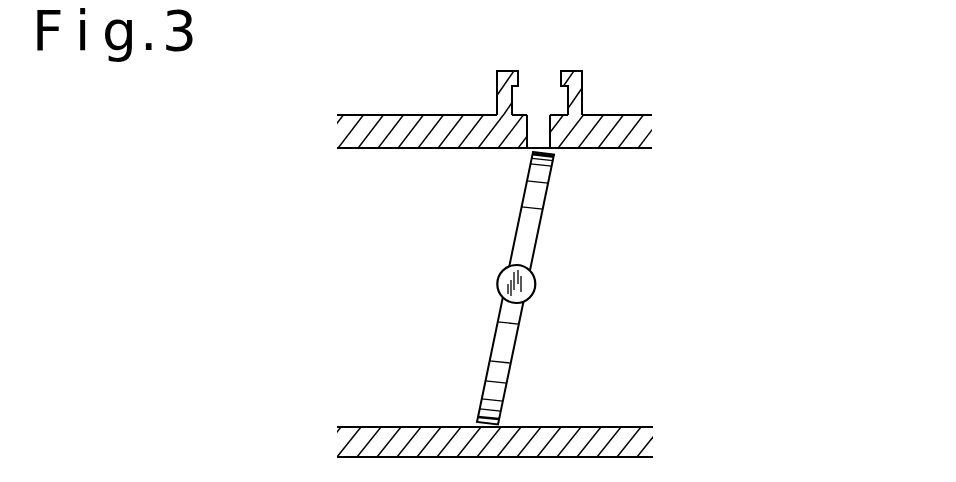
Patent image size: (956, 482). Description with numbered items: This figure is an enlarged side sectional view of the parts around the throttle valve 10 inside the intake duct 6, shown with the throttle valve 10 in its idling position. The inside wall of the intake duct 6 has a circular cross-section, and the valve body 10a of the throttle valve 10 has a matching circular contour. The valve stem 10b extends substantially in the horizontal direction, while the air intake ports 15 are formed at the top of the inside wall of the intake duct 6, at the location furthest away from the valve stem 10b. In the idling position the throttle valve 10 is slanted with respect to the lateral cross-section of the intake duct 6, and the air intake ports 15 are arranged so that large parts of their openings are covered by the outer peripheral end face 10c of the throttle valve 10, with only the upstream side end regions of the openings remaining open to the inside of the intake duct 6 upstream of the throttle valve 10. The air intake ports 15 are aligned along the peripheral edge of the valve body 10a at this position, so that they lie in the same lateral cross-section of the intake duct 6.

The intake duct 6 is at (402, 115).
The air intake port 15 is at (542, 129).
The throttle valve 10 is at (512, 245).
The valve body 10a is at (493, 375).
The valve stem 10b is at (535, 283).
The outer peripheral end face 10c is at (545, 148).